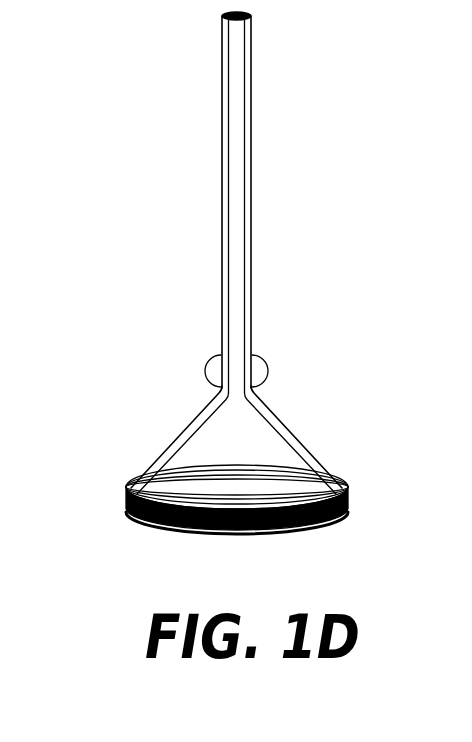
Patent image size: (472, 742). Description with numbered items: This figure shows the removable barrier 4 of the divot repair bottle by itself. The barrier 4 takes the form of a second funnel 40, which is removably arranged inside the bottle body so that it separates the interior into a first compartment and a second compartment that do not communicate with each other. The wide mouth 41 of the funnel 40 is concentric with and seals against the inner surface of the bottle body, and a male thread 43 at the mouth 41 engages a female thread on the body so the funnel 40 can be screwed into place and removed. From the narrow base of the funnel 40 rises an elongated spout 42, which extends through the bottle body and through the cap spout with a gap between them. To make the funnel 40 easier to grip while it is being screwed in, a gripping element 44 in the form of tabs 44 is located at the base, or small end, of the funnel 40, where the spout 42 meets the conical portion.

The barrier 4 is at (199, 301).
The second funnel 40 is at (288, 424).
The mouth 41 is at (303, 536).
The elongated spout 42 is at (251, 113).
The male thread 43 is at (126, 500).
The gripping element 44 is at (205, 371).